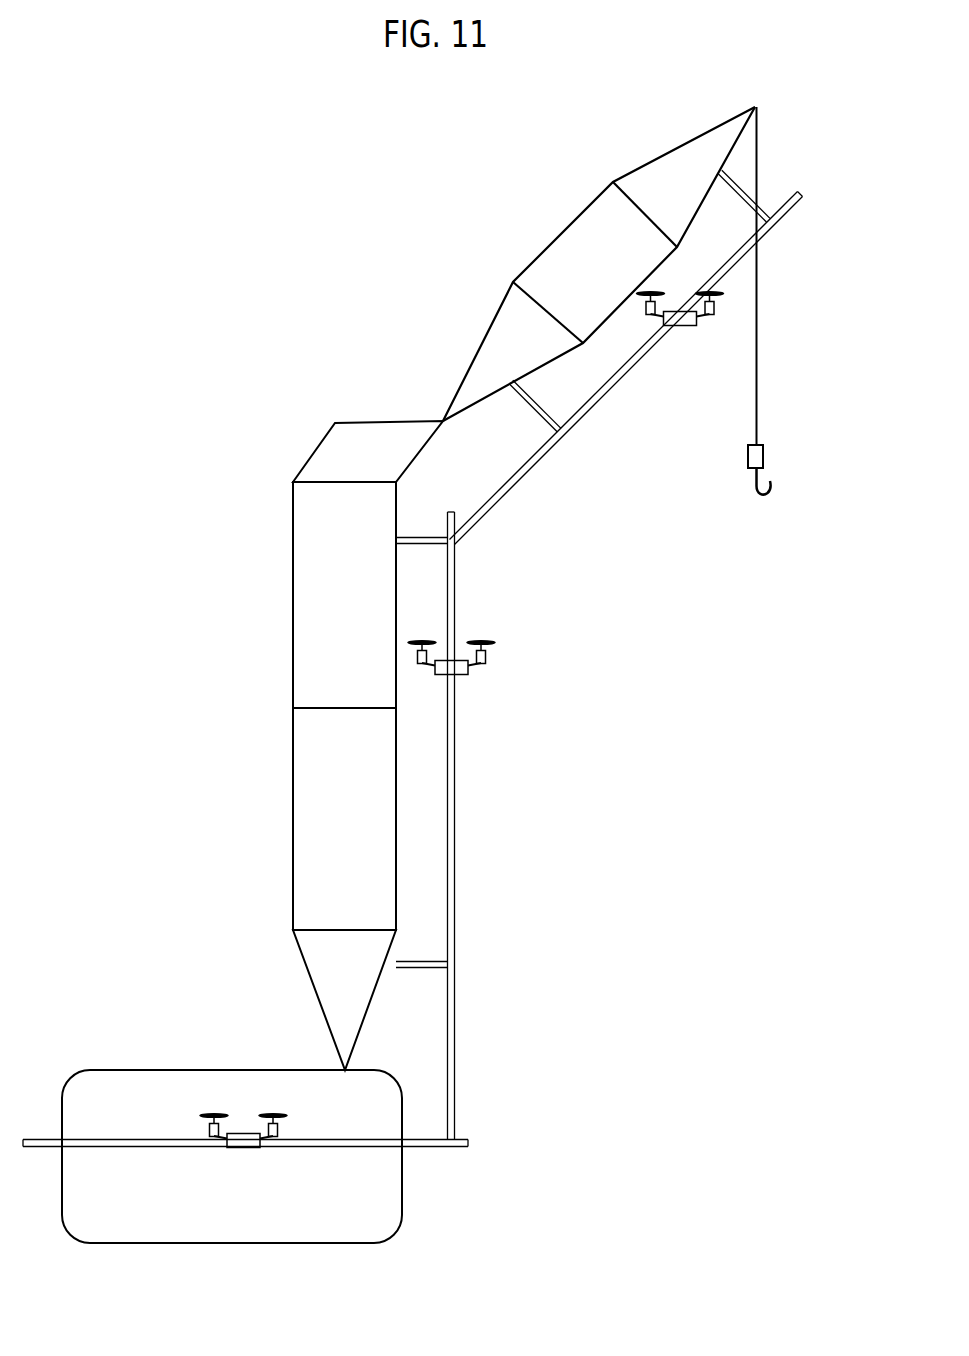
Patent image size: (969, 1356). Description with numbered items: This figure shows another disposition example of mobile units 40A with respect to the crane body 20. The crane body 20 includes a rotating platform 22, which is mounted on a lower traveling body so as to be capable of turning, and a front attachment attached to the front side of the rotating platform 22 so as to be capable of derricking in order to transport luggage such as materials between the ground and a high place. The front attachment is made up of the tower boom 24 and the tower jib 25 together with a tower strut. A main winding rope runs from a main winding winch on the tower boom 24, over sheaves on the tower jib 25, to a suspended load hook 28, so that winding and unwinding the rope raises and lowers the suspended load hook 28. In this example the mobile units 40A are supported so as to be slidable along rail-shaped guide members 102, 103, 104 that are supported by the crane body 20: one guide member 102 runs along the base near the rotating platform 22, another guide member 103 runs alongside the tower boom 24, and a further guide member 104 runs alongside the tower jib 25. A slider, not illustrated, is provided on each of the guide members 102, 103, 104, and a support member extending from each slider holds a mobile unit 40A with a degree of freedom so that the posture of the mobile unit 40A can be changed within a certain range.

The crane body 20 is at (379, 175).
The rotating platform 22 is at (118, 1068).
The tower boom 24 is at (293, 601).
The tower jib 25 is at (565, 228).
The suspended load hook 28 is at (765, 457).
The mobile unit 40A is at (683, 327).
The guide member 102 is at (428, 1150).
The guide member 103 is at (455, 886).
The guide member 104 is at (518, 480).